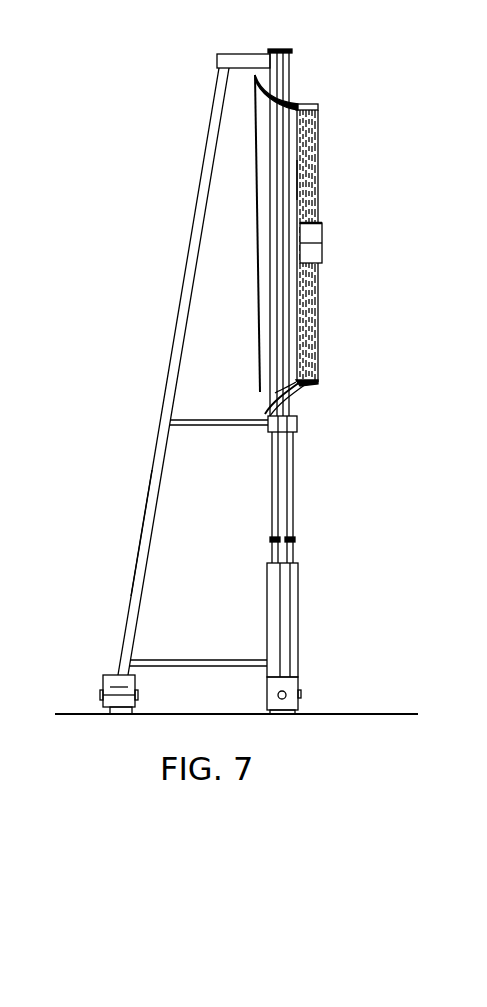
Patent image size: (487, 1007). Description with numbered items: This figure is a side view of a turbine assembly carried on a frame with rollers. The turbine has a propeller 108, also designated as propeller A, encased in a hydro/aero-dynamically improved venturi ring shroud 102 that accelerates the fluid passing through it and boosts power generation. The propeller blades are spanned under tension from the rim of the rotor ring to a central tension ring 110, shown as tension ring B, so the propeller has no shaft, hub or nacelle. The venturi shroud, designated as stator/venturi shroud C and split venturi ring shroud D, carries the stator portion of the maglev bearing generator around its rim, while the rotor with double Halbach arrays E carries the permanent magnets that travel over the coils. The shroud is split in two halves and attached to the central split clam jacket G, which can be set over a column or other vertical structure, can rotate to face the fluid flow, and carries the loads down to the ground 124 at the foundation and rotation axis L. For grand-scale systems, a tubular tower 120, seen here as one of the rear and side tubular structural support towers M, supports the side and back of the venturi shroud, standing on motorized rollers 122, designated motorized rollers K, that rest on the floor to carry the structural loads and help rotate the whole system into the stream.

The venturi ring shroud 102 is at (265, 243).
The propeller 108 is at (317, 168).
The central tension ring 110 is at (320, 268).
The tubular tower 120 is at (153, 460).
The motorized rollers 122 is at (107, 673).
The ground 124 is at (403, 712).
The propeller A is at (315, 180).
The tension ring B is at (322, 224).
The stator/venturi shroud C is at (291, 384).
The split venturi ring shroud D is at (275, 393).
The rotor with double Halbach arrays E is at (305, 380).
The split clam jacket G is at (290, 492).
The motorized rollers K is at (110, 687).
The foundation and rotation axis L is at (292, 625).
The rear and side tubular structural support towers M is at (145, 514).